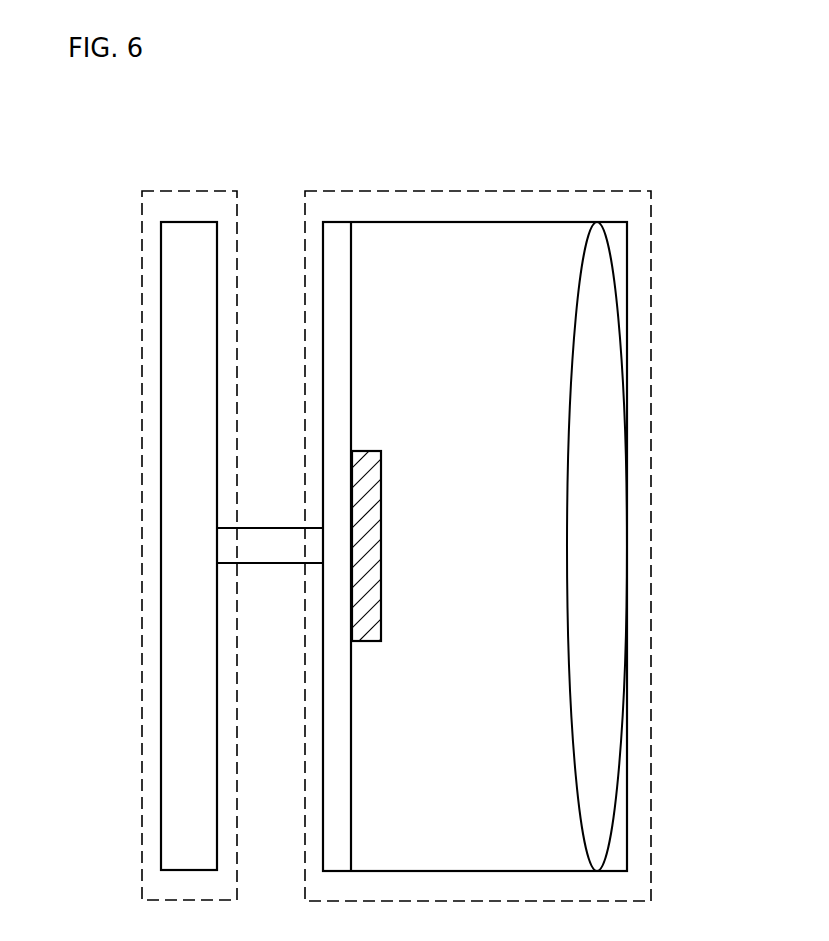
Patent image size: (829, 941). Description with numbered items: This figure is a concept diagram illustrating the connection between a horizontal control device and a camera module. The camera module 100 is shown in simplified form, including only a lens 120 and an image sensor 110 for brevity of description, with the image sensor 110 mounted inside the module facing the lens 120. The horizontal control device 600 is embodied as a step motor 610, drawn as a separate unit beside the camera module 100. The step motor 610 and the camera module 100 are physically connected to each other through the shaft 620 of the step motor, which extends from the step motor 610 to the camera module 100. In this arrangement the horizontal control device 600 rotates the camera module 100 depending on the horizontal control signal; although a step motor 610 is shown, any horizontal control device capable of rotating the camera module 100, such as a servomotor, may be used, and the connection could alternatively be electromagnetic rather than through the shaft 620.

The camera module 100 is at (397, 191).
The image sensor 110 is at (367, 451).
The lens 120 is at (627, 545).
The horizontal control device 600 is at (142, 545).
The step motor 610 is at (187, 222).
The shaft 620 is at (270, 528).